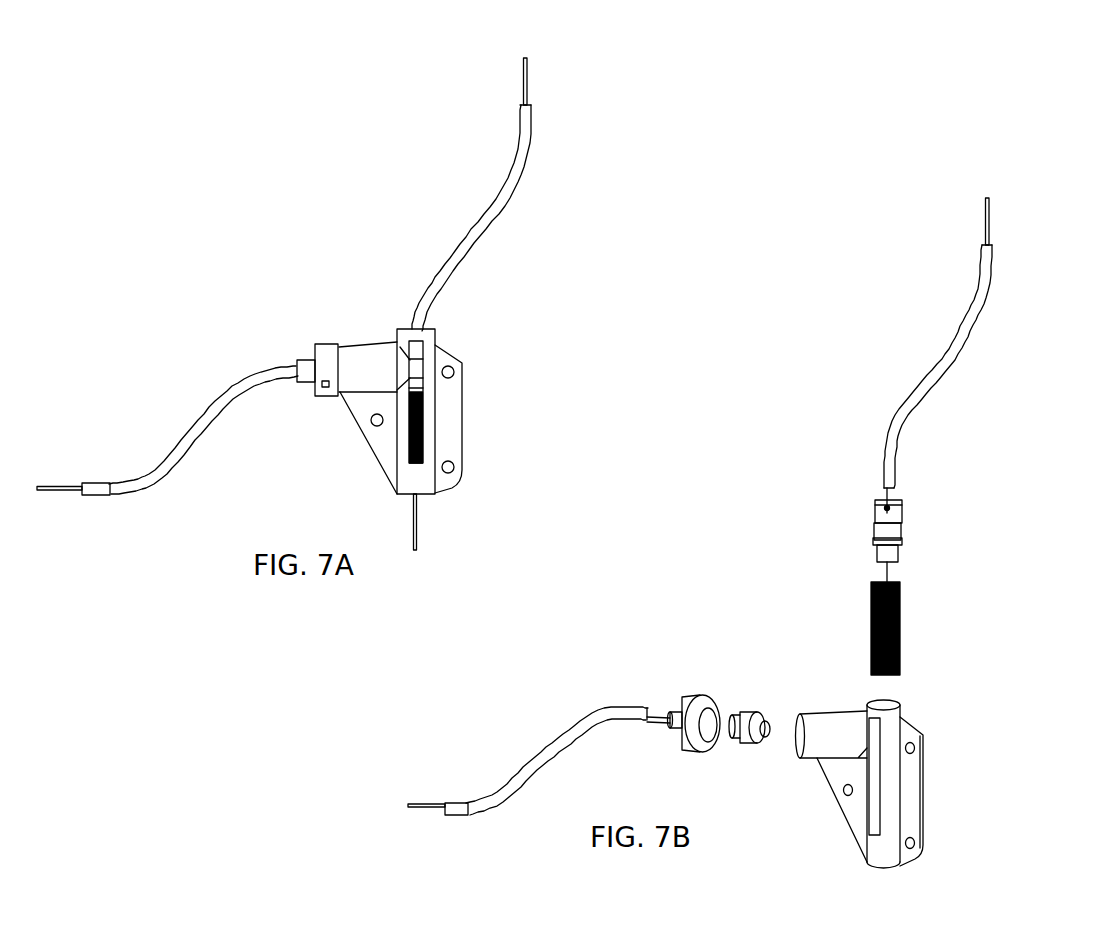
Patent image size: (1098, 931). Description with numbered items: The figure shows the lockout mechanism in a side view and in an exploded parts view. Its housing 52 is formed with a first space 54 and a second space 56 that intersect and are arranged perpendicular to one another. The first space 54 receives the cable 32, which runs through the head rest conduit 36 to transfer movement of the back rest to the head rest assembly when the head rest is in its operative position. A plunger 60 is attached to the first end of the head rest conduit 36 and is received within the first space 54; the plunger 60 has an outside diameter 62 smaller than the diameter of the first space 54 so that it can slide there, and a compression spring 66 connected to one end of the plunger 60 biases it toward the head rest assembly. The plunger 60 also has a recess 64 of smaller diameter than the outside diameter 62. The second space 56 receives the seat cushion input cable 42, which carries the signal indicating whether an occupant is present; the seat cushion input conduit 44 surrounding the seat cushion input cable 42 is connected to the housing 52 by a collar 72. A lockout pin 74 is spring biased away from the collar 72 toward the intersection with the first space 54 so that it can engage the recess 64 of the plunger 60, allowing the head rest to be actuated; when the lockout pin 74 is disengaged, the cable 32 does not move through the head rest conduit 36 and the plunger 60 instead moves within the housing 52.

In FIG. 7A, the cable 32 is at (528, 72).
In FIG. 7B, the cable 32 is at (990, 222).
In FIG. 7A, the head rest conduit 36 is at (492, 208).
In FIG. 7B, the head rest conduit 36 is at (953, 347).
In FIG. 7A, the seat cushion input cable 42 is at (47, 486).
In FIG. 7B, the seat cushion input cable 42 is at (428, 803).
In FIG. 7A, the seat cushion input conduit 44 is at (193, 410).
In FIG. 7B, the seat cushion input conduit 44 is at (547, 750).
In FIG. 7A, the housing 52 is at (450, 410).
In FIG. 7B, the housing 52 is at (913, 778).
In FIG. 7B, the first space 54 is at (907, 690).
In FIG. 7B, the second space 56 is at (798, 752).
In FIG. 7B, the plunger 60 is at (905, 510).
In FIG. 7B, the outside diameter 62 is at (874, 541).
In FIG. 7B, the recess 64 is at (900, 530).
In FIG. 7B, the compression spring 66 is at (900, 620).
In FIG. 7B, the collar 72 is at (705, 695).
In FIG. 7B, the lockout pin 74 is at (763, 712).